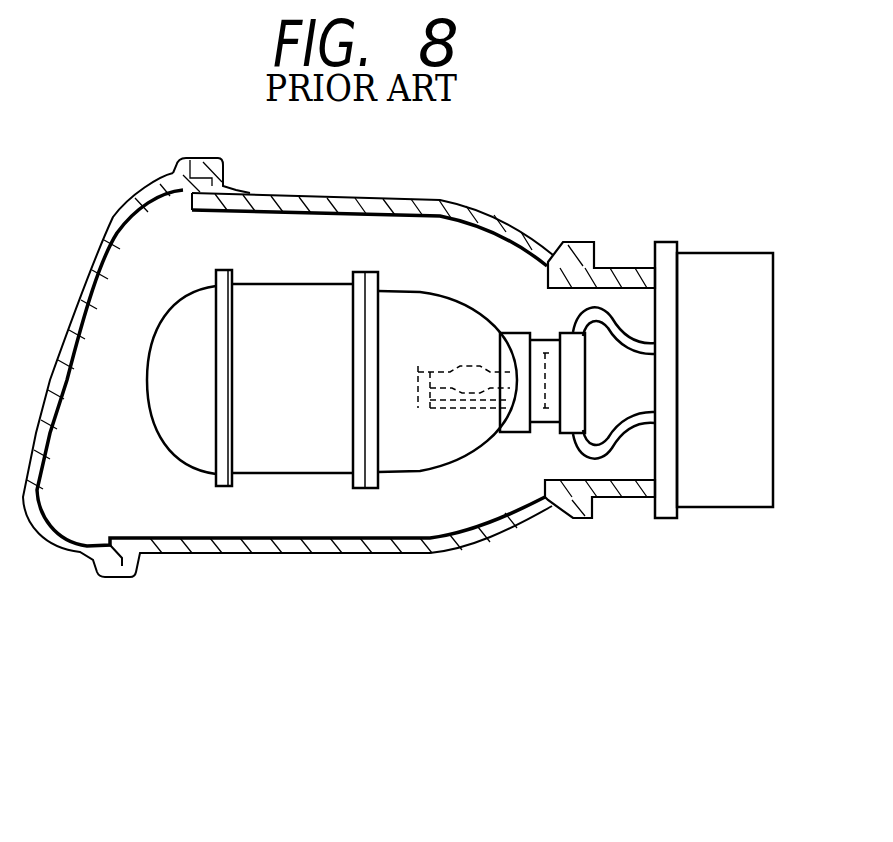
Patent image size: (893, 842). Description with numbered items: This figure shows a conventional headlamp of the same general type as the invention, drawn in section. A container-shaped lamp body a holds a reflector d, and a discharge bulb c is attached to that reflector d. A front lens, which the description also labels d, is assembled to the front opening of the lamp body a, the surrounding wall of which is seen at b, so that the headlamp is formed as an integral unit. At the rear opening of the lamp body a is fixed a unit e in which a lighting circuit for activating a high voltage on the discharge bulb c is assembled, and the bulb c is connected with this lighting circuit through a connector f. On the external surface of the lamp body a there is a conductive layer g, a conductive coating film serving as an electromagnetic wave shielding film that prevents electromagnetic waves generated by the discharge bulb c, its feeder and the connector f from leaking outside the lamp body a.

The lamp body a is at (383, 195).
The housing side wall b is at (90, 268).
The discharge bulb c is at (461, 410).
The reflector d is at (437, 307).
The unit e is at (757, 363).
The connector f is at (575, 393).
The conductive layer g is at (317, 196).